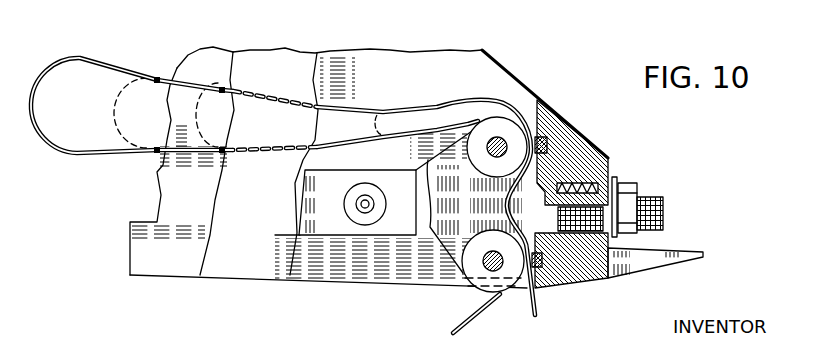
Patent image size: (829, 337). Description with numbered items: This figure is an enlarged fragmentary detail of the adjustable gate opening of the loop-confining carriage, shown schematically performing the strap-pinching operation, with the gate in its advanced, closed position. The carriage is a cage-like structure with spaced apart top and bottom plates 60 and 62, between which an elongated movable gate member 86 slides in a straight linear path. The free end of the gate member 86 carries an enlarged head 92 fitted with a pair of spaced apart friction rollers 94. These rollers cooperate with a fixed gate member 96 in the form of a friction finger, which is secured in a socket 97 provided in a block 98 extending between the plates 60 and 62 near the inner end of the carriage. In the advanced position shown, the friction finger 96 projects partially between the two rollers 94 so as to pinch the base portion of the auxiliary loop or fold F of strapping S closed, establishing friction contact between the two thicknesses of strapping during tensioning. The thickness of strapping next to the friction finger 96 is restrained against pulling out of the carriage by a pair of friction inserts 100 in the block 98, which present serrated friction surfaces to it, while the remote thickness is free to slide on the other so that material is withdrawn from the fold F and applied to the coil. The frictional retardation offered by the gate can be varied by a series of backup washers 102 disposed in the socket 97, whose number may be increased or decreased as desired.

The top plate 60 is at (218, 62).
The bottom plate 62 is at (372, 82).
The auxiliary loop or fold F is at (91, 158).
The strapping S is at (482, 330).
The movable gate member 86 is at (336, 222).
The enlarged head 92 is at (443, 166).
The friction rollers 94 is at (478, 248).
The fixed gate member 96 is at (547, 182).
The socket 97 is at (597, 262).
The block 98 is at (603, 157).
The friction inserts 100 is at (540, 116).
The backup washers 102 is at (630, 183).